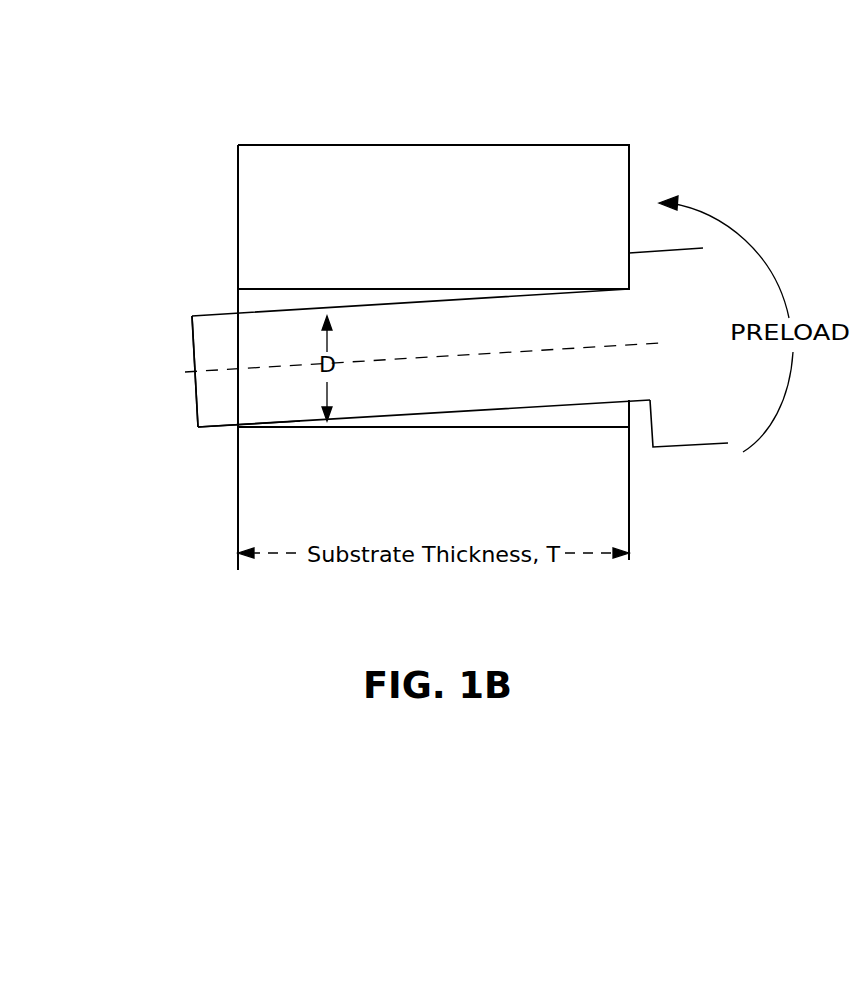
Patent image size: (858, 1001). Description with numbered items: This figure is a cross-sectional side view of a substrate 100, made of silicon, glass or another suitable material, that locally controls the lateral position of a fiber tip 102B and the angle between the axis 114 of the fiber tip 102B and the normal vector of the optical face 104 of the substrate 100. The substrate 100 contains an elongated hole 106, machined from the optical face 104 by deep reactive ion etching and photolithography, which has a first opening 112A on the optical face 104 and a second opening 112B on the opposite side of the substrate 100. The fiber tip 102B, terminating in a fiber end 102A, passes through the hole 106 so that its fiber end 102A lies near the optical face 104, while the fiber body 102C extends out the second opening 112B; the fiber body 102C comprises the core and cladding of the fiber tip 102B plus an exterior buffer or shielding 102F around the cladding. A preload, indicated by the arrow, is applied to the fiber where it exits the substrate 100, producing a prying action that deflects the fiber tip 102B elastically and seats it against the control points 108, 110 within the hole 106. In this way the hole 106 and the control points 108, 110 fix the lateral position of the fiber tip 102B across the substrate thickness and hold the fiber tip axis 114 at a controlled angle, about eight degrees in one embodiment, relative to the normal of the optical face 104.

The substrate 100 is at (360, 497).
The fiber end 102A is at (192, 352).
The fiber tip 102B is at (503, 330).
The fiber body 102C is at (728, 304).
The exterior buffer or shielding 102F is at (740, 427).
The optical face 104 is at (238, 210).
The elongated hole 106 is at (555, 417).
The control point 108 is at (226, 428).
The control point 110 is at (629, 290).
The first opening 112A is at (238, 297).
The second opening 112B is at (630, 413).
The fiber tip axis 114 is at (442, 358).